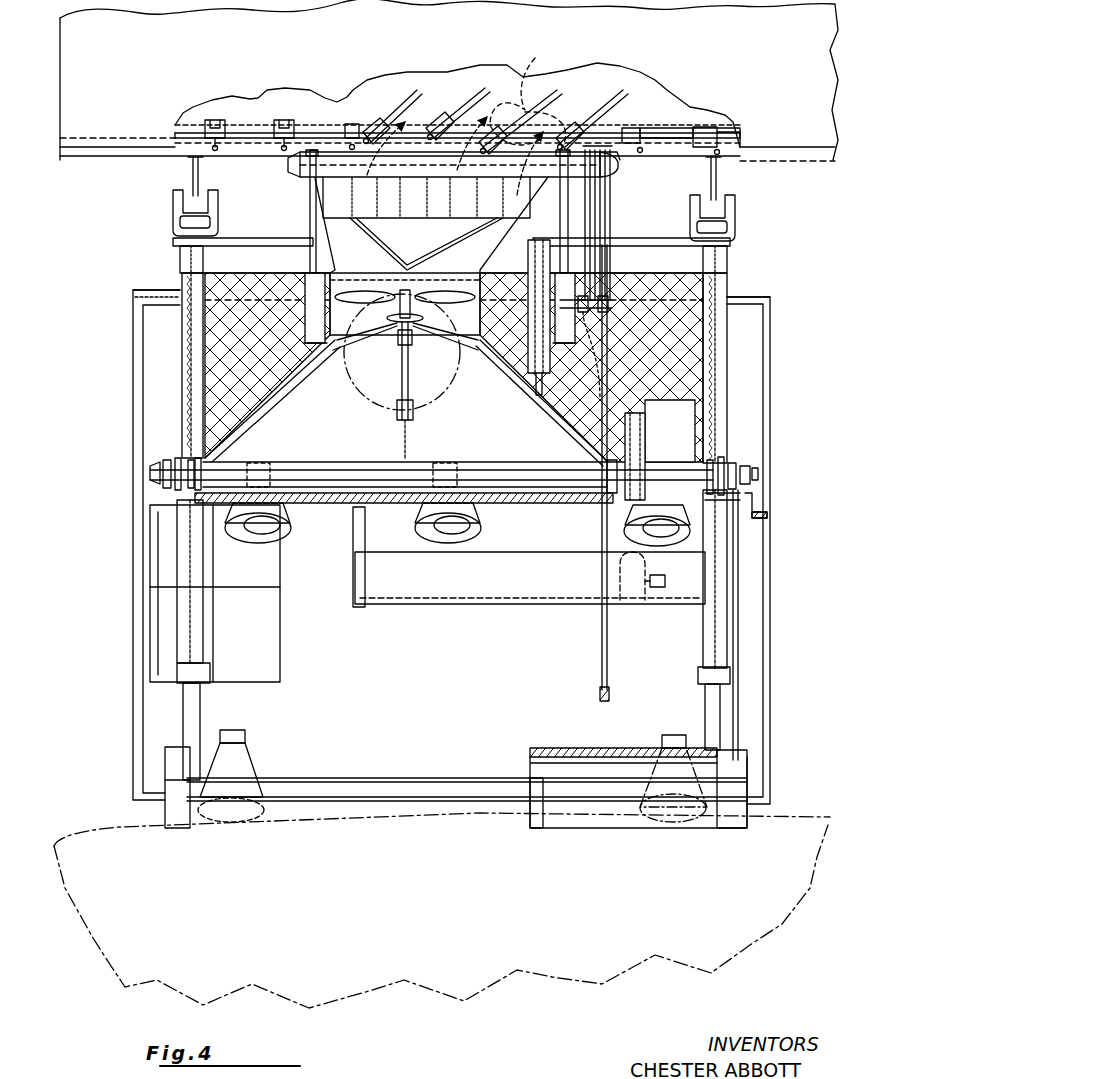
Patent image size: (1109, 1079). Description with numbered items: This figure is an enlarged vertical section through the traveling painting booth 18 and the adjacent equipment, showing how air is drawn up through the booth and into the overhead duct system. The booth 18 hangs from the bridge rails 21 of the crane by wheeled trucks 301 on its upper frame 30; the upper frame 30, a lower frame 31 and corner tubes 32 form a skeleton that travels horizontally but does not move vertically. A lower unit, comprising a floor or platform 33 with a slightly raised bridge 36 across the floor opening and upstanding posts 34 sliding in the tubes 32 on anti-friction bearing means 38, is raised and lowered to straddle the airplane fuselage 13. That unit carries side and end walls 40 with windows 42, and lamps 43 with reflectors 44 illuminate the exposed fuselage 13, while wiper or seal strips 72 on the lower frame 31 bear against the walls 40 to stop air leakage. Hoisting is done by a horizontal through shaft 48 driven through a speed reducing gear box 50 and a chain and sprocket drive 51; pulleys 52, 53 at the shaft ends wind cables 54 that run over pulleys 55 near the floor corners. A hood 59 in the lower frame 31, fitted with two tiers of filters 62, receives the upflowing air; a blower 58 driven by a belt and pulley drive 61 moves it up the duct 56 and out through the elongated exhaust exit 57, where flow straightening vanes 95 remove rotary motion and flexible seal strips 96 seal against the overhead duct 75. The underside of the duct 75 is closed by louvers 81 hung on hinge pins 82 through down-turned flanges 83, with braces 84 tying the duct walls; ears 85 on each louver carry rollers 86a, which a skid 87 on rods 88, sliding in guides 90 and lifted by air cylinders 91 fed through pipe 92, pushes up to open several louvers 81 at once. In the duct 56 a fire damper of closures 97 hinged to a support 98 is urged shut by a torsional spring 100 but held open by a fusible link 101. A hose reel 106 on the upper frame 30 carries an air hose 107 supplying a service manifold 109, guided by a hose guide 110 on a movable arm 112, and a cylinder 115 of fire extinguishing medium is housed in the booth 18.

The fuselage 13 is at (393, 902).
The booth 18 is at (775, 412).
The bridge rails 21 is at (193, 172).
The upper frame 30 is at (246, 246).
The lower frame 31 is at (720, 462).
The corner posts or tubes 32 is at (182, 280).
The platform 33 is at (475, 782).
The upstanding posts 34 is at (203, 716).
The raised bridge 36 is at (598, 748).
The anti-friction bearing means 38 is at (698, 675).
The side and end walls 40 is at (136, 470).
The windows 42 is at (268, 651).
The lamps 43 is at (265, 532).
The reflectors 44 is at (637, 512).
The horizontal through shaft 48 is at (504, 466).
The speed reducing gear box 50 is at (678, 441).
The chain and sprocket drive 51 is at (598, 462).
The pulley 52 is at (730, 500).
The pulley 53 is at (177, 462).
The lines or cables 54 is at (175, 608).
The pulleys 55 is at (165, 775).
The duct 56 is at (326, 292).
The exhaust exit 57 is at (426, 244).
The blower 58 is at (332, 318).
The hood 59 is at (405, 362).
The belt and pulley drive 61 is at (413, 325).
The filters 62 is at (345, 505).
The wiper or seal strips 72 is at (768, 510).
The overhead duct 75 is at (436, 56).
The louvers 81 is at (340, 120).
The hinge pins 82 is at (222, 128).
The down-turned flanges 83 is at (253, 140).
The braces 84 is at (650, 140).
The lugs or ears 85 is at (403, 138).
The rollers 86a is at (726, 147).
The cam or skid 87 is at (328, 147).
The vertical rods 88 is at (305, 258).
The guides 90 is at (306, 177).
The vertical cylinders 91 is at (530, 345).
The pipe 92 is at (300, 392).
The flow straightening vanes 95 is at (440, 200).
The seal strips 96 is at (615, 166).
The damper closures 97 is at (410, 405).
The horizontal support 98 is at (409, 335).
The torsional spring 100 is at (398, 340).
The fusible link 101 is at (402, 415).
The hose reel 106 is at (595, 215).
The air hose 107 is at (585, 205).
The service manifold 109 is at (600, 690).
The hose guide 110 is at (528, 92).
The movable arm 112 is at (535, 375).
The fire extinguishing cylinder 115 is at (522, 584).
The wheeled trucks 301 is at (170, 212).